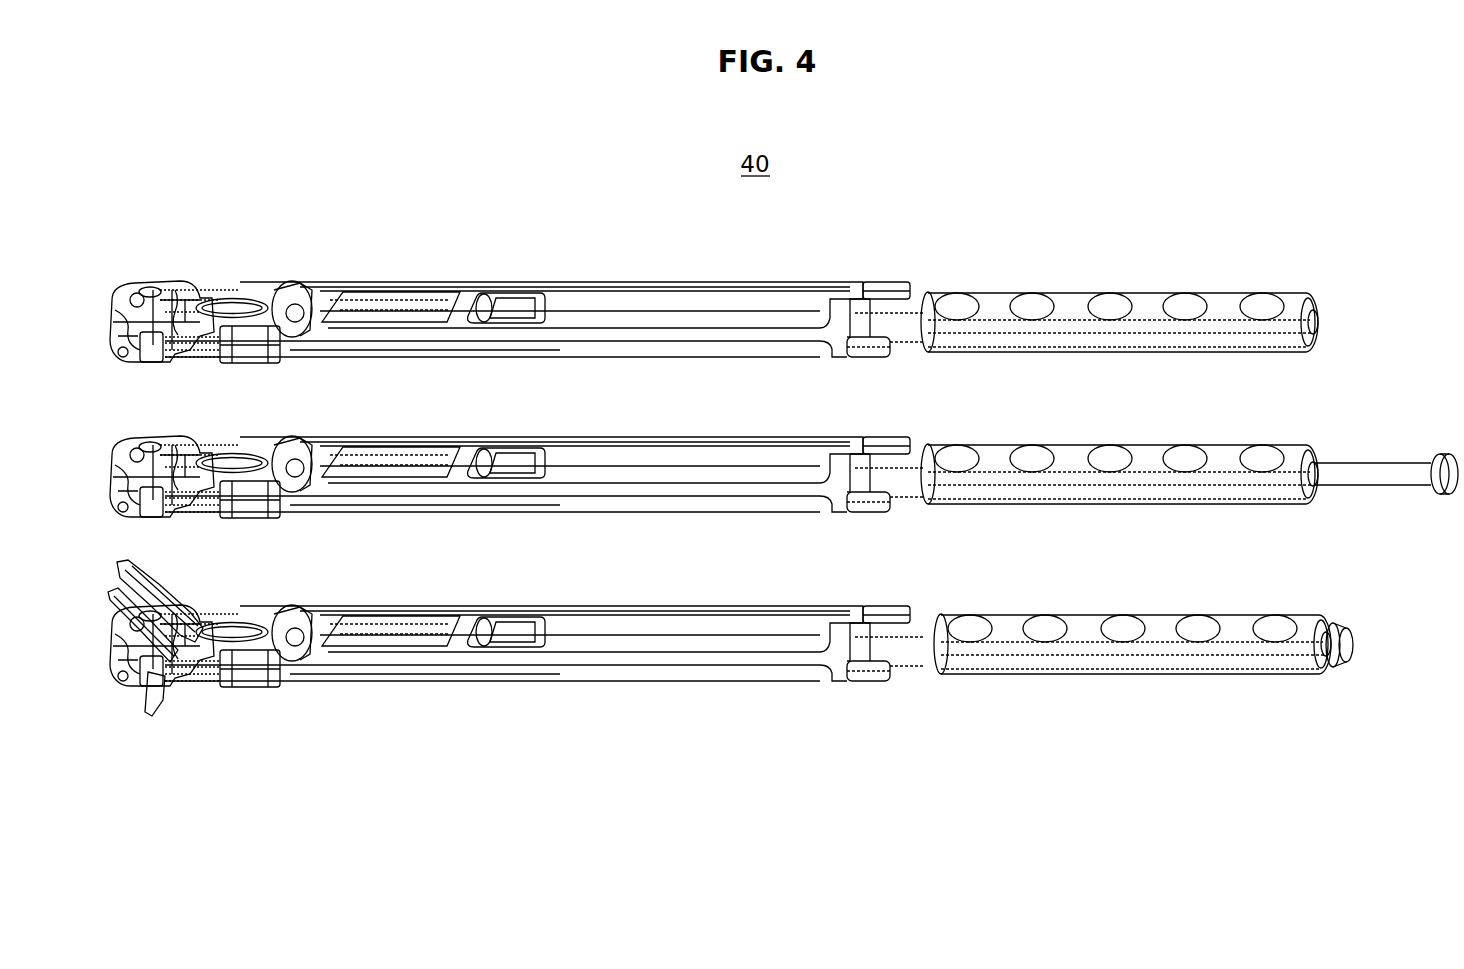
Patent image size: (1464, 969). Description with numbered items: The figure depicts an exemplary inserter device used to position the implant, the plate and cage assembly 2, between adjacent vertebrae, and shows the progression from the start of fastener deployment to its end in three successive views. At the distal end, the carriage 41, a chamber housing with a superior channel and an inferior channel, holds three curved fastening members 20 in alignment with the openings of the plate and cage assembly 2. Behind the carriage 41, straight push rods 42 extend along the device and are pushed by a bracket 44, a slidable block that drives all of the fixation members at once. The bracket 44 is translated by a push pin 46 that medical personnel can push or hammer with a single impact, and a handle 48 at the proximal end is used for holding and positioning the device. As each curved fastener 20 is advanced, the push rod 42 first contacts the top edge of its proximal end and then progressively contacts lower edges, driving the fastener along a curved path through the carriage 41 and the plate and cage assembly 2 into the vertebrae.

The plate and cage assembly 2 is at (148, 286).
The curved fastening member 20 is at (152, 640).
The carriage 41 is at (222, 287).
The push rod 42 is at (420, 287).
The bracket 44 is at (551, 305).
The push pin 46 is at (1357, 463).
The handle 48 is at (1172, 308).